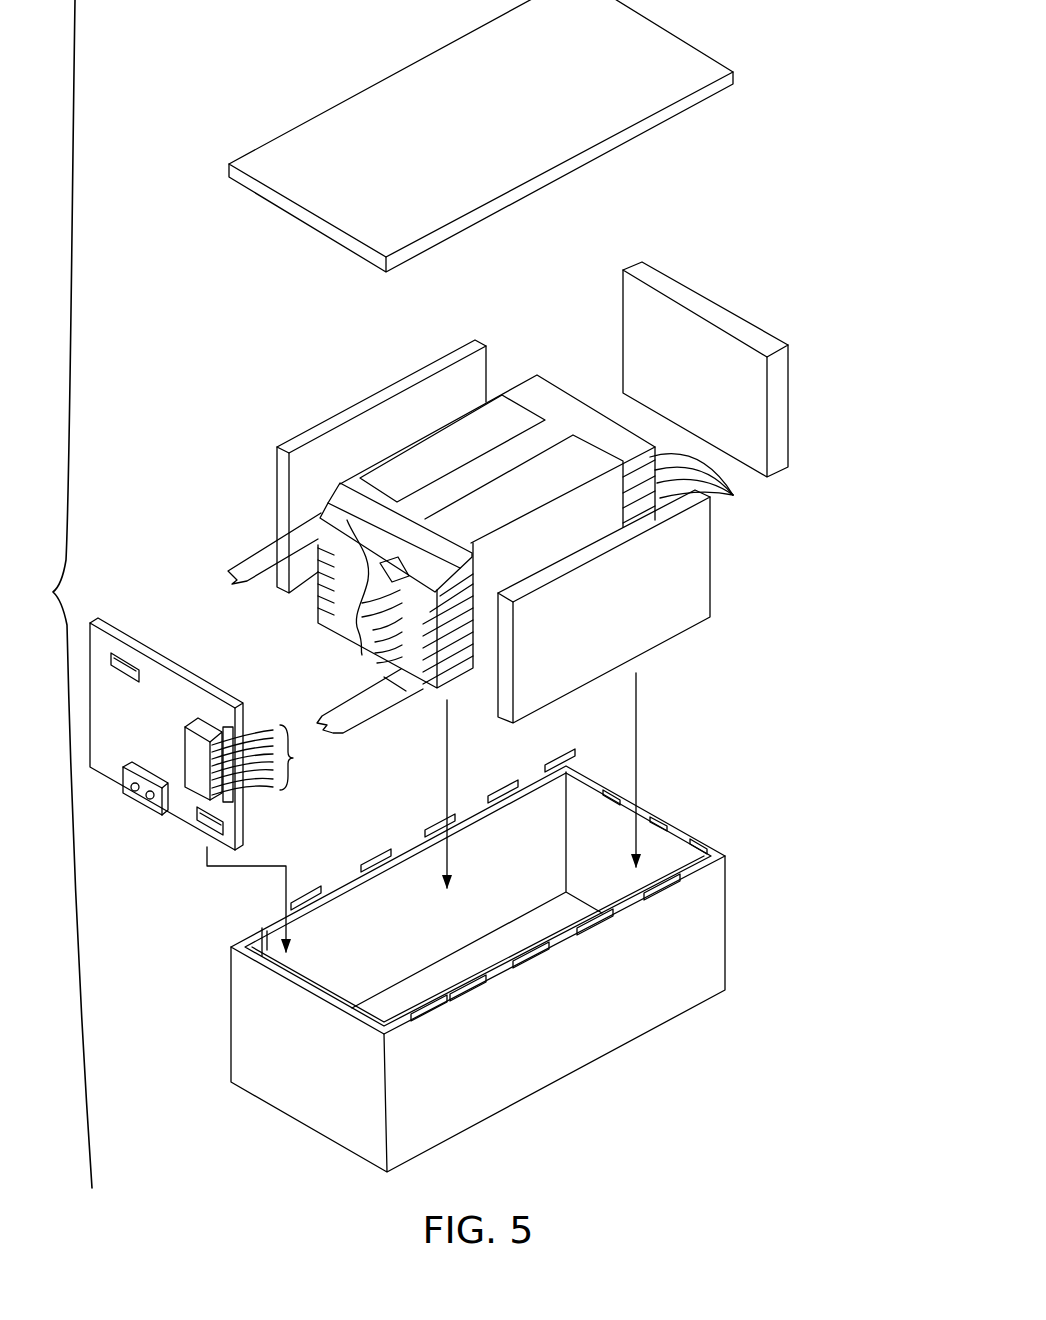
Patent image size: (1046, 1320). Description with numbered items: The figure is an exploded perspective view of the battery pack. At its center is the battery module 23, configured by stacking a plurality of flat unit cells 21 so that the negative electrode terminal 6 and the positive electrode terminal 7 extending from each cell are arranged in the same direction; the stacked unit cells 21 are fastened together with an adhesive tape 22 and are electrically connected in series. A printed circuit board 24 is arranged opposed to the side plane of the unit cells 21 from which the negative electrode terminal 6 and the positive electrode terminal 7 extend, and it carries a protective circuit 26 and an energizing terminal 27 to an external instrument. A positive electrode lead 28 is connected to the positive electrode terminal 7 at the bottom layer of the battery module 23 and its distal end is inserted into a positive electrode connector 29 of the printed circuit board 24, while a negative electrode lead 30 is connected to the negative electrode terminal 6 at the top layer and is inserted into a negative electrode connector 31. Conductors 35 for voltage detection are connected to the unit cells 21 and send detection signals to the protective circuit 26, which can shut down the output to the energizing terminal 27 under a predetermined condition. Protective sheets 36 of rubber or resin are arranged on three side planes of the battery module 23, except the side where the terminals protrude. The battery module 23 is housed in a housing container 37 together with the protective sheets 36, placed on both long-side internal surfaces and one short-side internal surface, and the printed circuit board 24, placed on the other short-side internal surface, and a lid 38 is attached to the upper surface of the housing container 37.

The negative electrode terminal 6 is at (328, 513).
The positive electrode terminal 7 is at (407, 573).
The unit cells 21 is at (707, 482).
The adhesive tape 22 is at (563, 463).
The battery module 23 is at (426, 438).
The printed circuit board 24 is at (122, 620).
The protective circuit 26 is at (198, 718).
The energizing terminal 27 is at (147, 808).
The positive electrode lead 28 is at (365, 713).
The positive electrode connector 29 is at (225, 830).
The negative electrode lead 30 is at (243, 560).
The negative electrode connector 31 is at (132, 665).
The conductors for voltage detection 35 is at (352, 618).
The protective sheets 36 is at (344, 418).
The housing container 37 is at (712, 930).
The lid 38 is at (668, 57).